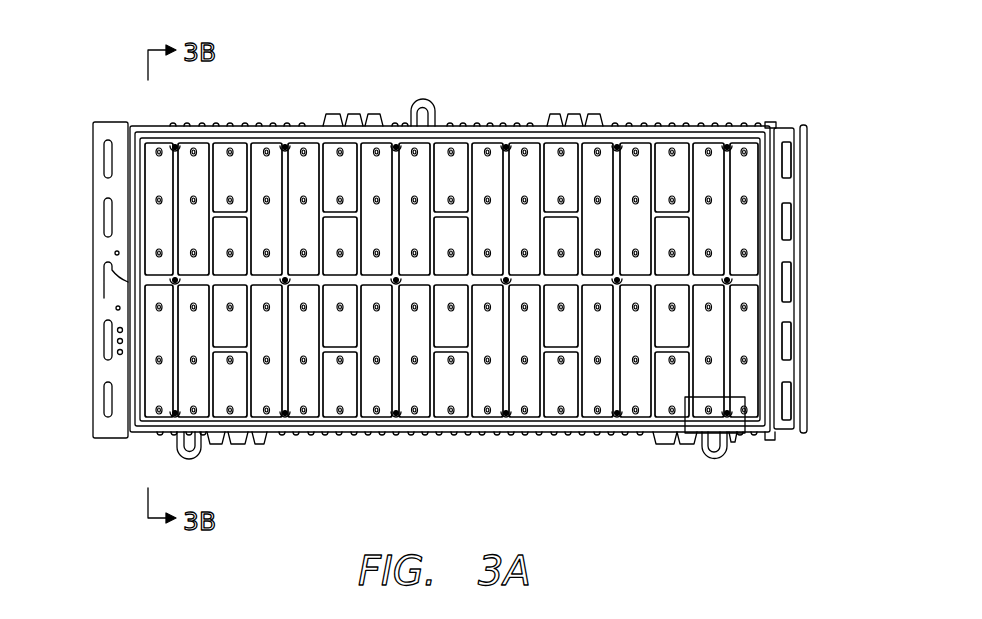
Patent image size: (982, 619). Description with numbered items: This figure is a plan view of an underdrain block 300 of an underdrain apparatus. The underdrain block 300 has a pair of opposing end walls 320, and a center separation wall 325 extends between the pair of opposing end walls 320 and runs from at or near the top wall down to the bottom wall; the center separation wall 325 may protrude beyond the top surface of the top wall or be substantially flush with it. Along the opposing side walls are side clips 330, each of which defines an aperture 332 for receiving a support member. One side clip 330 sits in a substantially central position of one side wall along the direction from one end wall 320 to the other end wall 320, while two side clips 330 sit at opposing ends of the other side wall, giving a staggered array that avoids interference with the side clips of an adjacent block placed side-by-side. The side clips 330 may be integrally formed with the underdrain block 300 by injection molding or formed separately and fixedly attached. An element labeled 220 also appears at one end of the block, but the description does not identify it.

The underdrain block 300 is at (766, 46).
The end plate 220 is at (128, 192).
The end walls 320 is at (776, 197).
The center separation wall 325 is at (622, 272).
The side clips 330 is at (413, 100).
The aperture 332 is at (434, 104).